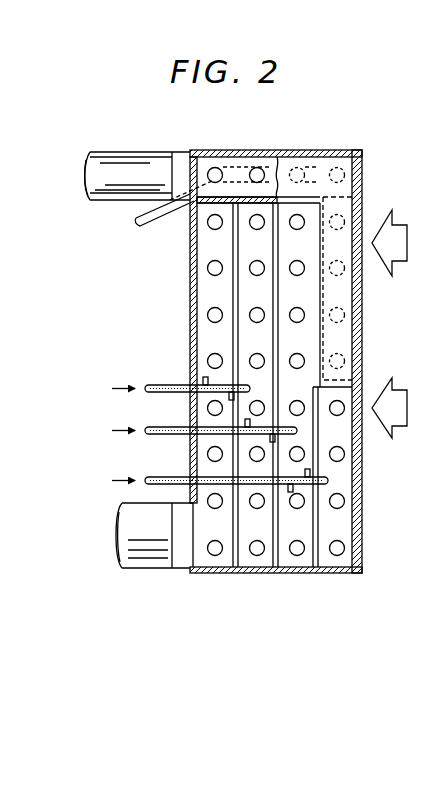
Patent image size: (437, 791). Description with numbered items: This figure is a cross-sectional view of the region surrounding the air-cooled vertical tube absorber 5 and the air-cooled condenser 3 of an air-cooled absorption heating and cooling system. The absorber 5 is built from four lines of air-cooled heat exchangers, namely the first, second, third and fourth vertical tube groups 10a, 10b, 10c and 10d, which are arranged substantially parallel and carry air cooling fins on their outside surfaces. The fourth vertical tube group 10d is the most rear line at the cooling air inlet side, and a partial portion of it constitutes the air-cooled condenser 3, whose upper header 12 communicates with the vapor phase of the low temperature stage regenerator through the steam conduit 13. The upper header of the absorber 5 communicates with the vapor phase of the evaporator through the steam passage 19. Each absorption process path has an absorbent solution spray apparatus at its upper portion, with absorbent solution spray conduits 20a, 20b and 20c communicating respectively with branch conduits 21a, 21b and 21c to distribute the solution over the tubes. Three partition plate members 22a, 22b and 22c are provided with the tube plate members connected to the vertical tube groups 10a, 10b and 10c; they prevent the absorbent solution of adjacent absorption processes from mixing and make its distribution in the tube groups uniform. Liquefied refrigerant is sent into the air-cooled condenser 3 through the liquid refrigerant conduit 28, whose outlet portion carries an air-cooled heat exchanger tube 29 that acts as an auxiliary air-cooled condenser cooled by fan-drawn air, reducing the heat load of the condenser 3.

The air-cooled condenser 3 is at (338, 167).
The air-cooled vertical tube absorber 5 is at (210, 570).
The first line of vertical tube group 10a is at (216, 556).
The second line of vertical tube group 10b is at (257, 556).
The third line of vertical tube group 10c is at (298, 556).
The fourth line of vertical tube group 10d is at (338, 556).
The upper header 12 is at (298, 160).
The steam conduit 13 is at (138, 160).
The steam passage 19 is at (155, 572).
The absorbent solution spray conduit 20a is at (170, 394).
The absorbent solution spray conduit 20b is at (170, 436).
The absorbent solution spray conduit 20c is at (150, 484).
The branch conduit 21a is at (234, 398).
The branch conduit 21b is at (275, 441).
The branch conduit 21c is at (328, 481).
The partition plate member 22a is at (236, 300).
The partition plate member 22b is at (275, 347).
The partition plate member 22c is at (316, 393).
The liquid refrigerant conduit 28 is at (155, 221).
The air-cooled heat exchanger tube 29 is at (213, 167).